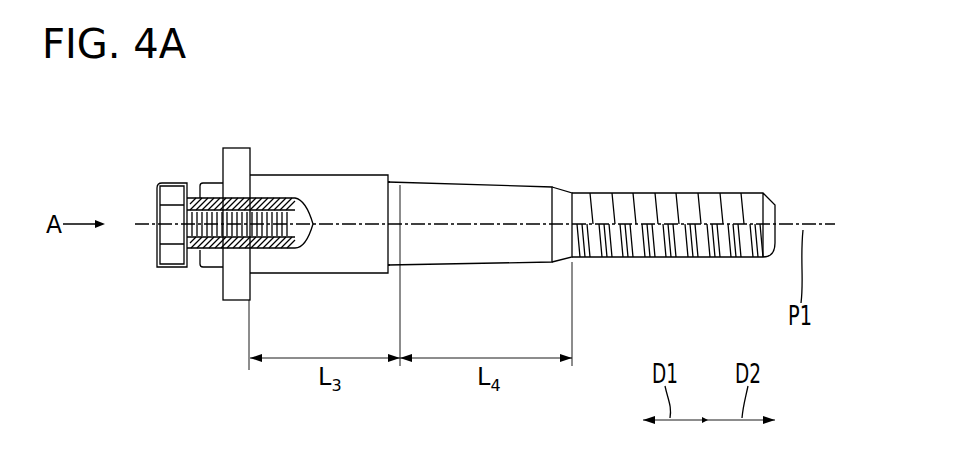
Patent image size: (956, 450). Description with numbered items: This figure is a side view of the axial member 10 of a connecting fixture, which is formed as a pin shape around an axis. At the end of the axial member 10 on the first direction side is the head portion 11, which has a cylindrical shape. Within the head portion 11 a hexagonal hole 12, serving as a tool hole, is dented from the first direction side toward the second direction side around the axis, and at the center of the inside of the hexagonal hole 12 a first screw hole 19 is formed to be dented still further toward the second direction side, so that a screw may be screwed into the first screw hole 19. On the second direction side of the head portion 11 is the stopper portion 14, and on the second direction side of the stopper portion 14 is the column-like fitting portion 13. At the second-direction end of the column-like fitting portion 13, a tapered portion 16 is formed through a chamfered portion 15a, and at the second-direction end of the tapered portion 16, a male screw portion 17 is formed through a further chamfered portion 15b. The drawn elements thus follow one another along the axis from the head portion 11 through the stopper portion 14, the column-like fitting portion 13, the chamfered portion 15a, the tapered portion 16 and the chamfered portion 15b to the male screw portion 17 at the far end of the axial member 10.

The axial member 10 is at (693, 128).
The head portion 11 is at (184, 270).
The hexagonal hole 12 is at (156, 195).
The column-like fitting portion 13 is at (312, 275).
The stopper portion 14 is at (240, 285).
The chamfered portion 15a is at (392, 270).
The chamfered portion 15b is at (568, 264).
The tapered portion 16 is at (523, 205).
The male screw portion 17 is at (740, 250).
The first screw hole 19 is at (197, 205).